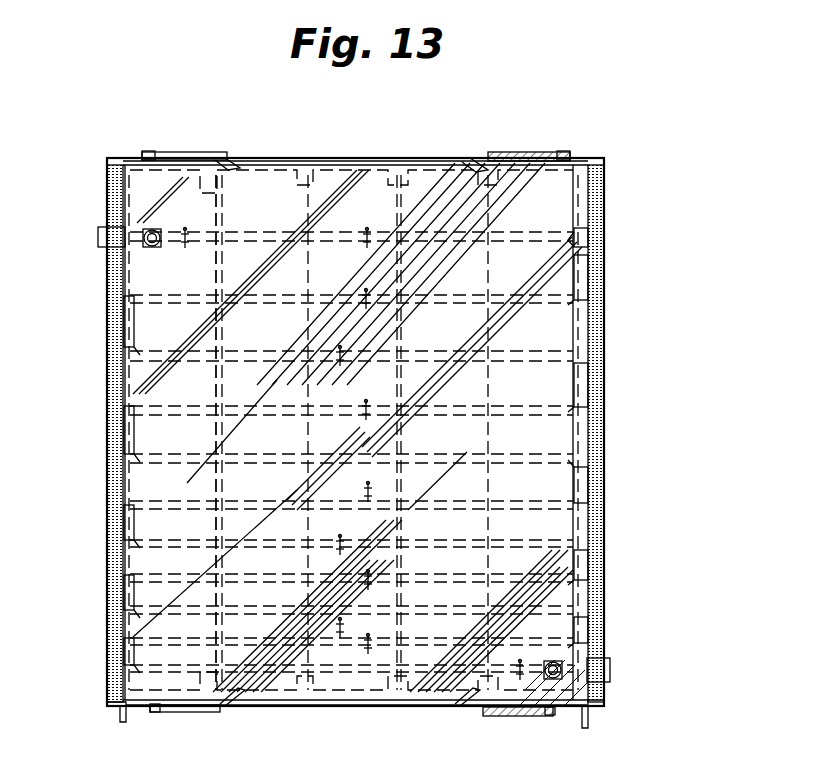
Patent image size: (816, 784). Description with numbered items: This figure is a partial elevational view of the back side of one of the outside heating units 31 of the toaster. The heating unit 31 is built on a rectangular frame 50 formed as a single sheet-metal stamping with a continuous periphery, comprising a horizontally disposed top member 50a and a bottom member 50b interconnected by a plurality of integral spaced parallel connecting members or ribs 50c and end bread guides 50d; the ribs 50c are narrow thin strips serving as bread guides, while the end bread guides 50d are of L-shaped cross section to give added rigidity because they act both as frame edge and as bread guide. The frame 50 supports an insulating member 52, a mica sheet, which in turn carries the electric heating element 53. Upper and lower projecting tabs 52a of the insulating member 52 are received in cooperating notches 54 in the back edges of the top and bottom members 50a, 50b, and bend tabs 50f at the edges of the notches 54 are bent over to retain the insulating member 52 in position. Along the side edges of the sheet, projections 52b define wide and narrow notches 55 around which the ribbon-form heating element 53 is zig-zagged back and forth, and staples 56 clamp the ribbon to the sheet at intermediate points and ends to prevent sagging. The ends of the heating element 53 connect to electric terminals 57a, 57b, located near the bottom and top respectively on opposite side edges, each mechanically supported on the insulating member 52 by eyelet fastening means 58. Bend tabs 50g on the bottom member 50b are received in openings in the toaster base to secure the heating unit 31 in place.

The outside heating unit 31 is at (310, 725).
The rectangular frame 50 is at (606, 447).
The top member 50a is at (330, 160).
The bottom member 50b is at (350, 707).
The connecting members or ribs 50c is at (296, 327).
The end bread guides 50d is at (115, 410).
The bend tabs 50f is at (232, 165).
The bend tabs 50g is at (118, 712).
The insulating member 52 is at (568, 208).
The projecting tabs 52a is at (200, 152).
The projections 52b is at (126, 520).
The electric heating element 53 is at (337, 248).
The notches 54 is at (150, 156).
The notches 55 is at (130, 375).
The staples 56 is at (186, 230).
The electric terminal 57a is at (612, 668).
The electric terminal 57b is at (100, 236).
The eyelet fastening means 58 is at (145, 246).